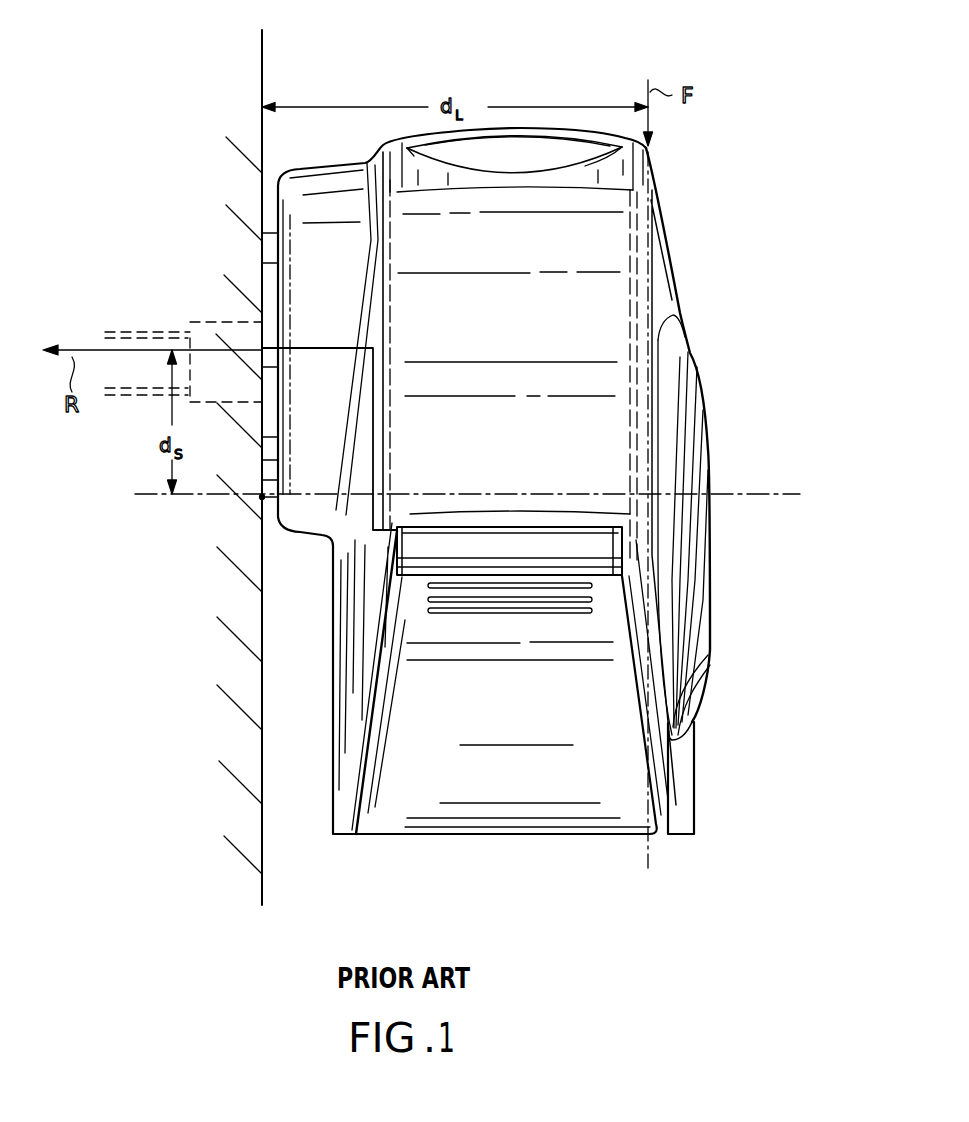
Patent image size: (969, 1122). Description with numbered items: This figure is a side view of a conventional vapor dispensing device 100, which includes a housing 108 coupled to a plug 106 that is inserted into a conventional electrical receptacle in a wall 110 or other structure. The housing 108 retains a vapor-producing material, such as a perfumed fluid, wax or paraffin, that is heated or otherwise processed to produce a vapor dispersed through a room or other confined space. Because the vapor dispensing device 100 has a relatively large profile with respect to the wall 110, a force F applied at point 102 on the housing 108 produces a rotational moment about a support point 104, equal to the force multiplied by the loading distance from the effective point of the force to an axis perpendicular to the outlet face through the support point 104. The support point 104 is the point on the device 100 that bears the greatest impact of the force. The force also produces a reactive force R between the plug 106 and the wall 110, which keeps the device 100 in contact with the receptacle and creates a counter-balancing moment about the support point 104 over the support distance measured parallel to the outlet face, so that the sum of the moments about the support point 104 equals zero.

The vapor dispensing device 100 is at (759, 176).
The point 102 is at (648, 150).
The support point 104 is at (262, 497).
The plug 106 is at (206, 328).
The housing 108 is at (660, 289).
The wall 110 is at (262, 102).